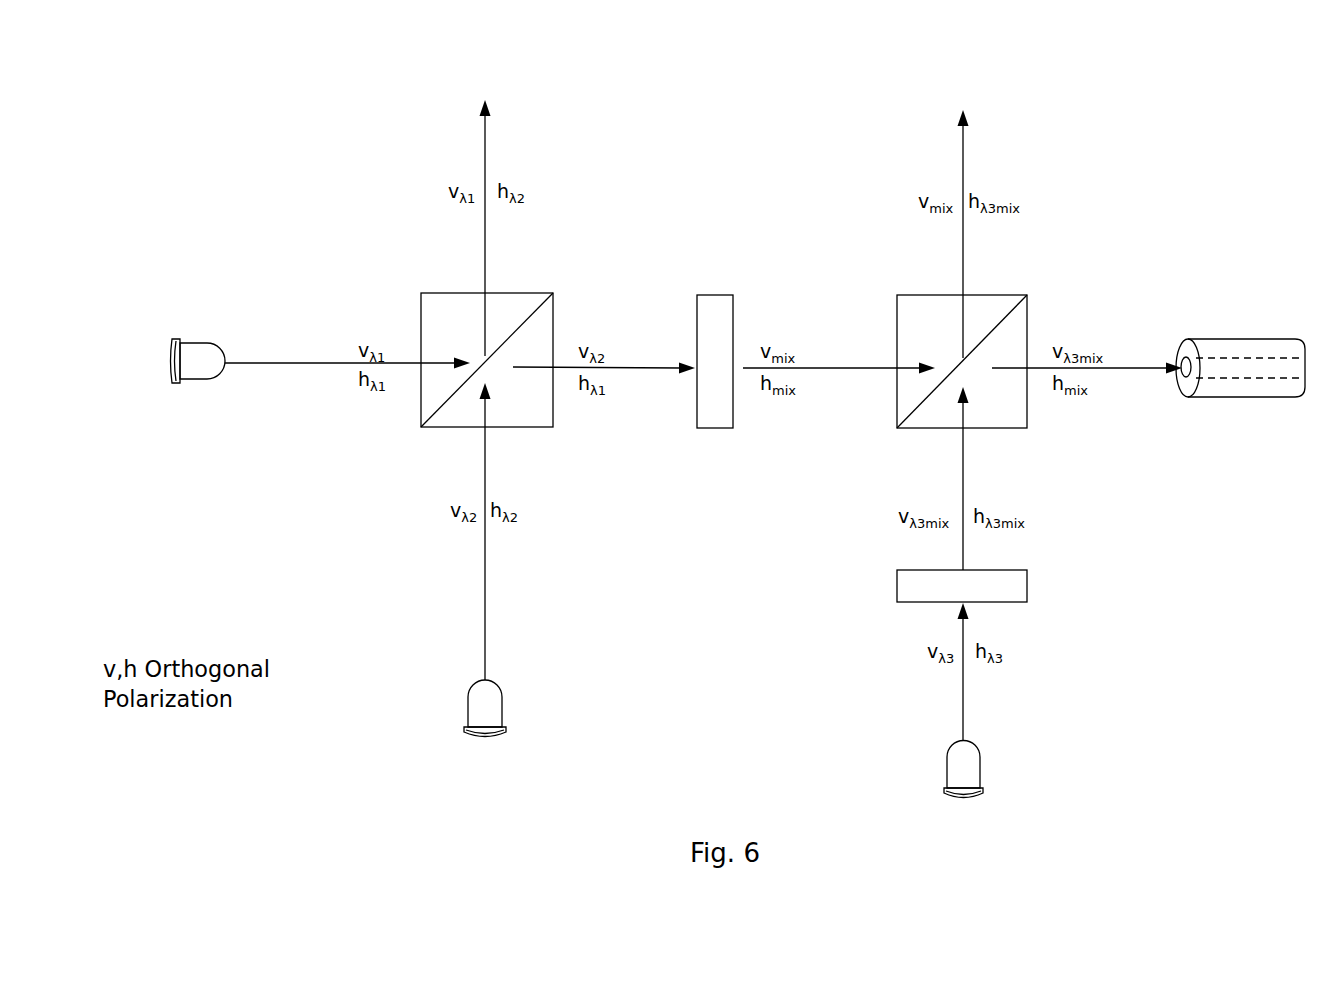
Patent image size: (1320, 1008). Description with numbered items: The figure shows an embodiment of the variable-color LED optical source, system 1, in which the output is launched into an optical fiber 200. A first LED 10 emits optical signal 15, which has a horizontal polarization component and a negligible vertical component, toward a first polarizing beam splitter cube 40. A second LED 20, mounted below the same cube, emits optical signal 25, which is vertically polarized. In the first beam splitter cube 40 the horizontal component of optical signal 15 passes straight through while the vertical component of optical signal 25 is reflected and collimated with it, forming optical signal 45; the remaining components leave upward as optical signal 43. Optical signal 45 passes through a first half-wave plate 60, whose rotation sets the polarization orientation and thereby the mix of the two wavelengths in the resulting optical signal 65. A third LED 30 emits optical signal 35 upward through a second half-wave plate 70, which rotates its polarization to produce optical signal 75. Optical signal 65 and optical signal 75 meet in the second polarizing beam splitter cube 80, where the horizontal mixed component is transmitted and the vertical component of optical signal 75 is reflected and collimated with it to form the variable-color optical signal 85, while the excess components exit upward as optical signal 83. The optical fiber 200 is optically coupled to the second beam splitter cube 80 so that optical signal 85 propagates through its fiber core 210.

The system 1 is at (298, 165).
The first LED 10 is at (202, 340).
The optical signal 15 is at (284, 363).
The second LED 20 is at (467, 688).
The optical signal 25 is at (485, 581).
The third LED 30 is at (948, 745).
The optical signal 35 is at (970, 703).
The first polarizing beam splitter cube 40 is at (452, 293).
The optical signal 43 is at (485, 150).
The optical signal 45 is at (662, 368).
The first half-wave plate 60 is at (723, 295).
The optical signal 65 is at (857, 369).
The second half-wave plate 70 is at (897, 580).
The optical signal 75 is at (967, 453).
The second polarizing beam splitter cube 80 is at (910, 295).
The excess optical signal 83 is at (963, 163).
The variable-color optical signal 85 is at (1123, 368).
The optical fiber 200 is at (1235, 337).
The fiber core 210 is at (1228, 372).